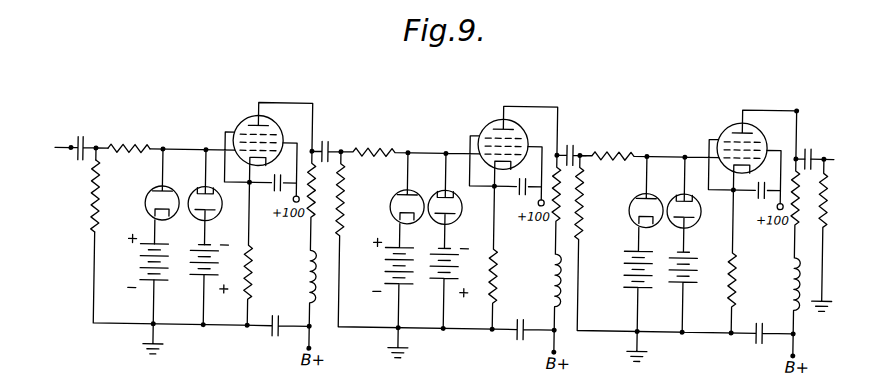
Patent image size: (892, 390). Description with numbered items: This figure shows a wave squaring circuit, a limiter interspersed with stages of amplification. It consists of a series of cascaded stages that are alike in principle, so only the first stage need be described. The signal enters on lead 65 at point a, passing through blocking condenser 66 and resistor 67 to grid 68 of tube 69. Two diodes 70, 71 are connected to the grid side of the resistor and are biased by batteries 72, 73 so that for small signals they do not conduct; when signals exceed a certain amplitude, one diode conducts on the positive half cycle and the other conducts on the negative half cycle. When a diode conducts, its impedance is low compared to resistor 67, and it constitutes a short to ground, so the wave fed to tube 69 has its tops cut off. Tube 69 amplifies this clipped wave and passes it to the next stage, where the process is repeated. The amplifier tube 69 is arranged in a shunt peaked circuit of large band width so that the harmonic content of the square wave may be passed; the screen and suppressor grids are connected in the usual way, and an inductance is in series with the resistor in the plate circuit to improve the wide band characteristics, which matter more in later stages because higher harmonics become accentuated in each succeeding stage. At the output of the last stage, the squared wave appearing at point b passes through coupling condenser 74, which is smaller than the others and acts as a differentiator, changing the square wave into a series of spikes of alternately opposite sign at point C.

The lead 65 is at (57, 150).
The blocking condenser 66 is at (87, 140).
The resistor 67 is at (136, 145).
The grid 68 is at (272, 149).
The tube 69 is at (245, 120).
The diode 70 is at (146, 197).
The diode 71 is at (191, 188).
The battery 72 is at (140, 263).
The battery 73 is at (208, 243).
The coupling condenser 74 is at (806, 136).
The point a is at (71, 148).
The point b is at (796, 100).
The point c C is at (824, 148).